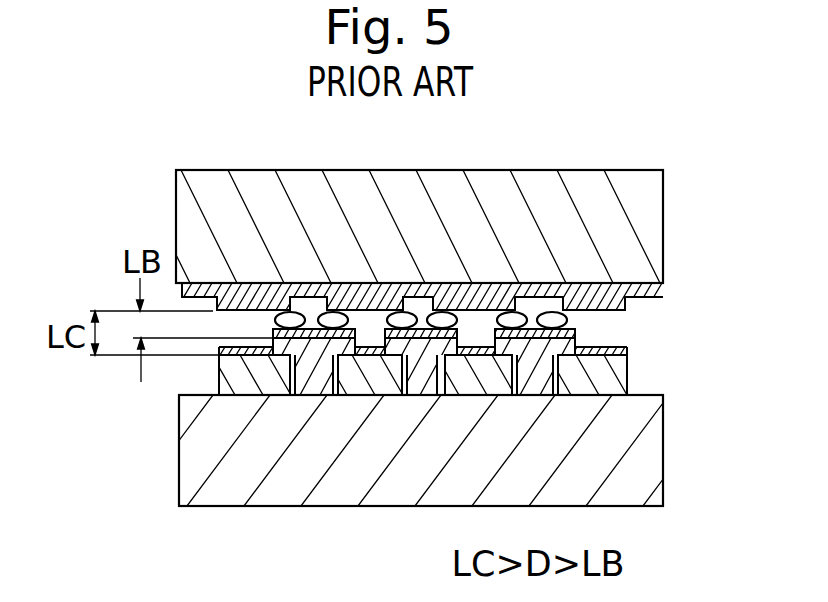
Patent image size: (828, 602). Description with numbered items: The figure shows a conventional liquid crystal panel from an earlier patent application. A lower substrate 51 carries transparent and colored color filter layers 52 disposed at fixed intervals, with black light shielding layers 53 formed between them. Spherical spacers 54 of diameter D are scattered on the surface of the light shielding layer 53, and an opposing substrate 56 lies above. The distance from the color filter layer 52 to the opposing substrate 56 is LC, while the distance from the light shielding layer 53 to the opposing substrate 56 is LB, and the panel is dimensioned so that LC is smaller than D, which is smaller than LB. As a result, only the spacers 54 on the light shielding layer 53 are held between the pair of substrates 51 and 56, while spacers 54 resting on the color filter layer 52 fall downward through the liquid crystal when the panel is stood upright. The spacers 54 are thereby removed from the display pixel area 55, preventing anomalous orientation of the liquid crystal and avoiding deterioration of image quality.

The substrate 51 is at (647, 450).
The color filter layer 52 is at (612, 380).
The light shielding layer 53 is at (316, 385).
The spacer 54 is at (334, 320).
The display pixel area 55 is at (613, 341).
The opposing substrate 56 is at (632, 190).